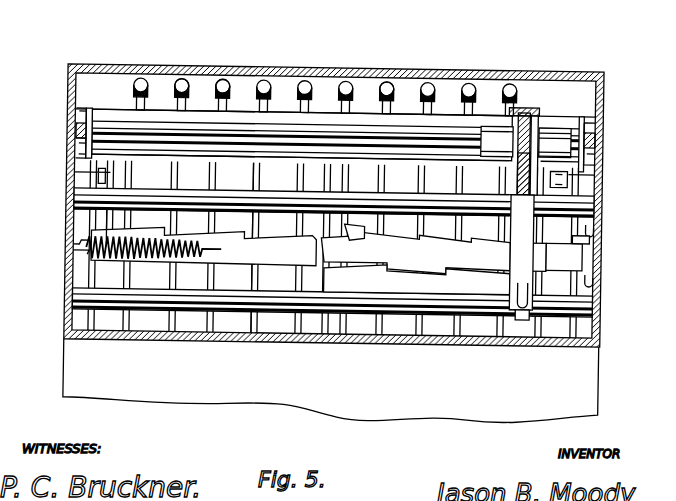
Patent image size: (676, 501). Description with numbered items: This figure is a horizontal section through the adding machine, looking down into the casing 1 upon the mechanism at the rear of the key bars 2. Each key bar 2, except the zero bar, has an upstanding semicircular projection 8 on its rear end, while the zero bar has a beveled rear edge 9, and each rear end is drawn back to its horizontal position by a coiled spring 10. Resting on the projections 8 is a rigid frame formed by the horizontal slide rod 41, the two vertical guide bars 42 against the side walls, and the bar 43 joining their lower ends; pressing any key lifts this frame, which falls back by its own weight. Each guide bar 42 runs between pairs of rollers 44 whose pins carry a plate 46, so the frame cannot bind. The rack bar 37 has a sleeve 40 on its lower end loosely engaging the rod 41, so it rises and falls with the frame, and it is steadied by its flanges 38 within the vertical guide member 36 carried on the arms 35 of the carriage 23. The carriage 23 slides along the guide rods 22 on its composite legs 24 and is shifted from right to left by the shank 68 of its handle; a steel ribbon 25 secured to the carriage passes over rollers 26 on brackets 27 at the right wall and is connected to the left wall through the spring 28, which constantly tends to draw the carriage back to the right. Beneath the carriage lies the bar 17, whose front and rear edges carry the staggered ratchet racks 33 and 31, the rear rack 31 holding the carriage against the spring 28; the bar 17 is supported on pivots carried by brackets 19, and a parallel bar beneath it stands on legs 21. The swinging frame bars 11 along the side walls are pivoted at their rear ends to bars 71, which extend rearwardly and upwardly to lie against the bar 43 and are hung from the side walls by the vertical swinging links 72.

The casing 1 is at (297, 74).
The key bars 2 is at (260, 338).
The upstanding projection 8 is at (422, 107).
The beveled upper edge 9 is at (136, 106).
The coiled spring 10 is at (217, 82).
The bars 11 is at (92, 321).
The bar 17 is at (416, 253).
The brackets 19 is at (85, 256).
The legs 21 is at (125, 343).
The guide rods 22 is at (582, 205).
The carriage 23 is at (521, 218).
The composite legs 24 is at (509, 330).
The flexible tape or ribbon 25 is at (337, 249).
The rollers 26 is at (590, 238).
The brackets 27 is at (596, 226).
The spring 28 is at (154, 262).
The ratchet teeth 31 is at (358, 230).
The rack 33 is at (392, 271).
The arms 35 is at (522, 140).
The vertical guide member 36 is at (538, 108).
The rack bar 37 is at (518, 170).
The flanges 38 is at (531, 105).
The sleeve 40 is at (549, 139).
The slide rod 41 is at (357, 140).
The vertical guide bars 42 is at (72, 136).
The bar 43 is at (235, 125).
The rollers 44 is at (65, 156).
The plate 46 is at (89, 112).
The shank 68 is at (518, 332).
The bars 71 is at (110, 226).
The swinging links 72 is at (106, 177).